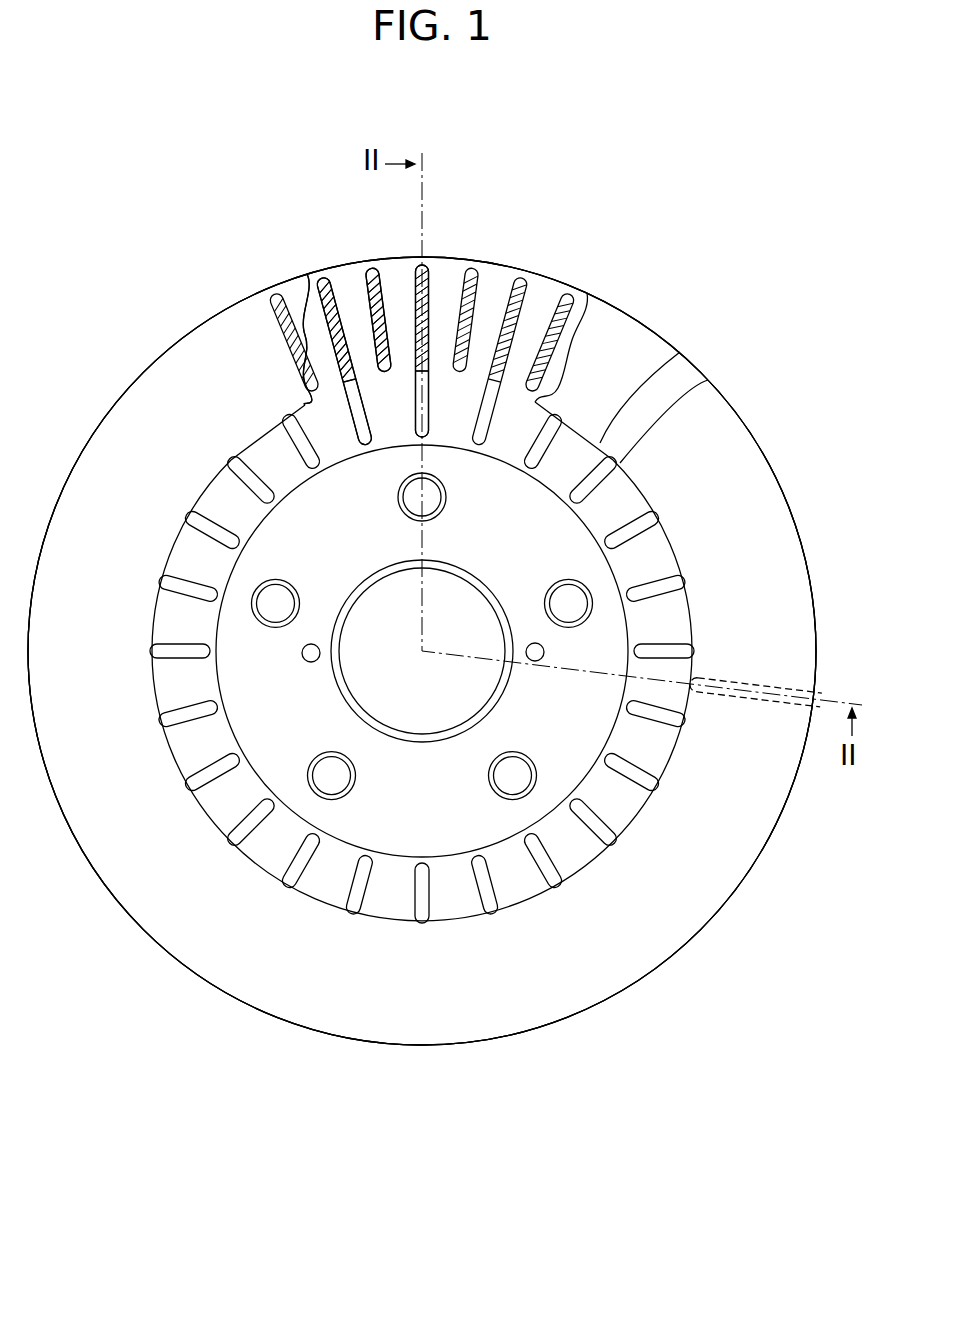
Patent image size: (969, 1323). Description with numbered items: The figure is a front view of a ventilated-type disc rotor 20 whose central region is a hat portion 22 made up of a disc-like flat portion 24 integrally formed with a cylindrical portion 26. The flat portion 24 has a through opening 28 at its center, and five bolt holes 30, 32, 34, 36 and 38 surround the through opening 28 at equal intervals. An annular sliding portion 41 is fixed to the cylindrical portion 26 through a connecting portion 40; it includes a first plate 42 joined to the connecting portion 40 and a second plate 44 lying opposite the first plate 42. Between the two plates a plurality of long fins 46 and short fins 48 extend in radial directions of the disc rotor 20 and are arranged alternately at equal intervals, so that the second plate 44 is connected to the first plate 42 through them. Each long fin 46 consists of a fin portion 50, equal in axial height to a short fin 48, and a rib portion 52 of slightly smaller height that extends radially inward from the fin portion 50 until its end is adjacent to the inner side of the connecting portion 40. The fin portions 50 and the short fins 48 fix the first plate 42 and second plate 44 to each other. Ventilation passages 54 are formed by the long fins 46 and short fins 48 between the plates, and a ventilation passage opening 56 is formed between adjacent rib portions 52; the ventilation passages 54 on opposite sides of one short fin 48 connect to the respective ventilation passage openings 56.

The disc rotor 20 is at (647, 305).
The hat portion 22 is at (755, 322).
The flat portion 24 is at (680, 352).
The cylindrical portion 26 is at (708, 380).
The through opening 28 is at (485, 693).
The bolt hole 30 is at (428, 496).
The bolt hole 32 is at (560, 598).
The bolt hole 34 is at (520, 764).
The bolt hole 36 is at (345, 790).
The bolt hole 38 is at (270, 620).
The connecting portion 40 is at (513, 898).
The annular sliding portion 41 is at (663, 952).
The first plate 42 is at (548, 270).
The second plate 44 is at (440, 1025).
The long fin 46 is at (307, 280).
The short fin 48 is at (478, 268).
The fin portion 50 is at (350, 278).
The rib portion 52 is at (358, 427).
The ventilation passage 54 is at (330, 270).
The ventilation passage opening 56 is at (395, 428).